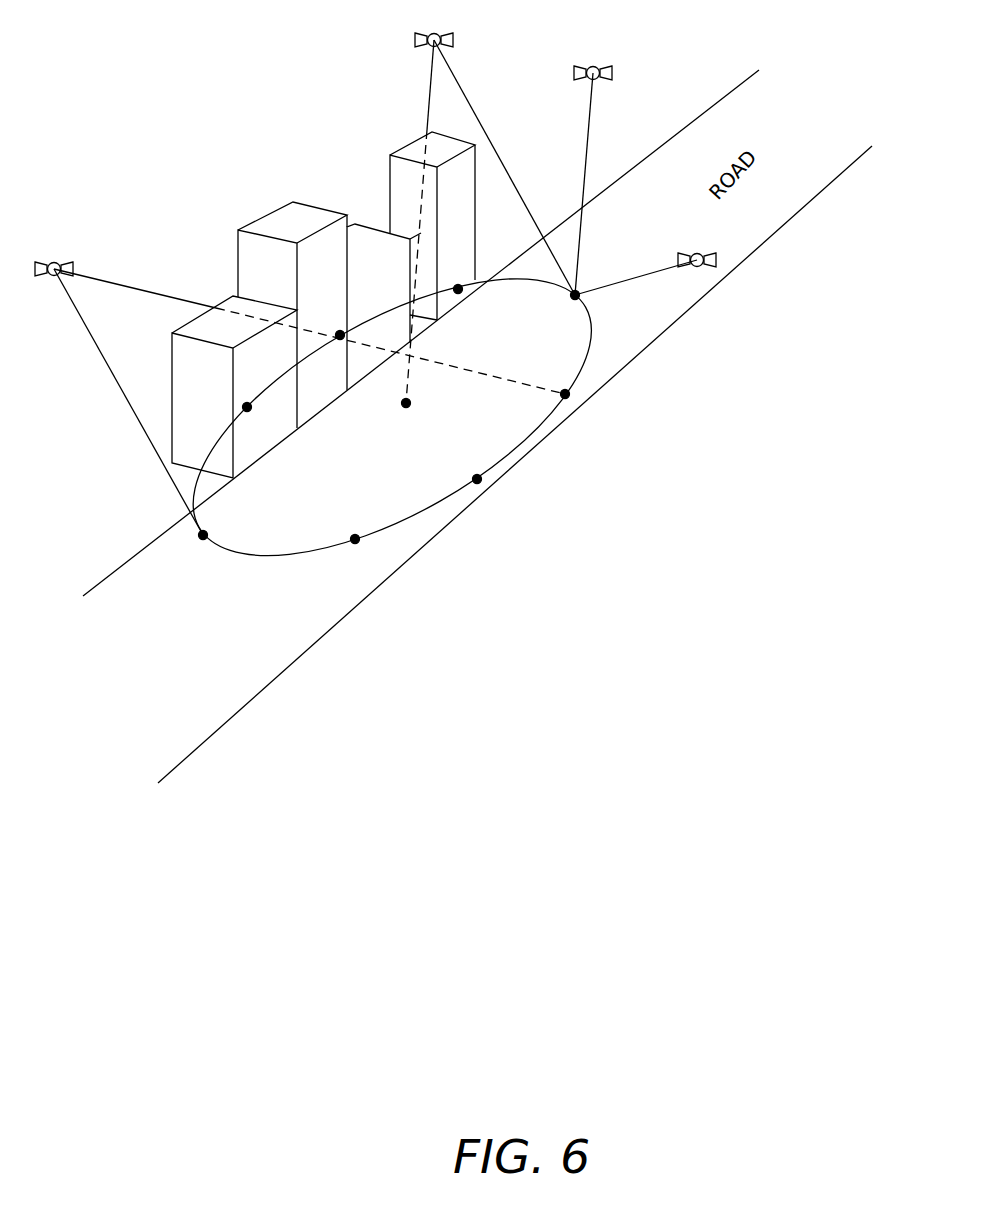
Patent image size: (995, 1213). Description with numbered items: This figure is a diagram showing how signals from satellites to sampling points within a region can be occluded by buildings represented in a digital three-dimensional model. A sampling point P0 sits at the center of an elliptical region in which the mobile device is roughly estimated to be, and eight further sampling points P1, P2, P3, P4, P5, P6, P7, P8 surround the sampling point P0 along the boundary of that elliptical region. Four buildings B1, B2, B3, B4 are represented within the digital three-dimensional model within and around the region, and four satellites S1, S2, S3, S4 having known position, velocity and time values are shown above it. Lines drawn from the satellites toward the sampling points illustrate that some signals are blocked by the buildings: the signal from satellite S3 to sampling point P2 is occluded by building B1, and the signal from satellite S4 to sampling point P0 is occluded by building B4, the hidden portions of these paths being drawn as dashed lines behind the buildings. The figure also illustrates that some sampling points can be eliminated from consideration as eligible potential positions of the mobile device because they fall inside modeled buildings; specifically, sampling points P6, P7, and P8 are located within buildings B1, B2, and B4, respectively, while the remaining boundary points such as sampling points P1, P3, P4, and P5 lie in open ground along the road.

The satellite S1 is at (593, 61).
The satellite S2 is at (697, 249).
The satellite S3 is at (54, 257).
The satellite S4 is at (434, 28).
The building B1 is at (234, 387).
The building B2 is at (292, 315).
The building B3 is at (384, 307).
The building B4 is at (433, 226).
The sampling point P0 is at (408, 417).
The sampling point P1 is at (568, 309).
The sampling point P2 is at (558, 383).
The sampling point P3 is at (478, 467).
The sampling point P4 is at (360, 527).
The sampling point P5 is at (215, 522).
The sampling point P6 is at (259, 421).
The sampling point P7 is at (336, 351).
The sampling point P8 is at (458, 278).